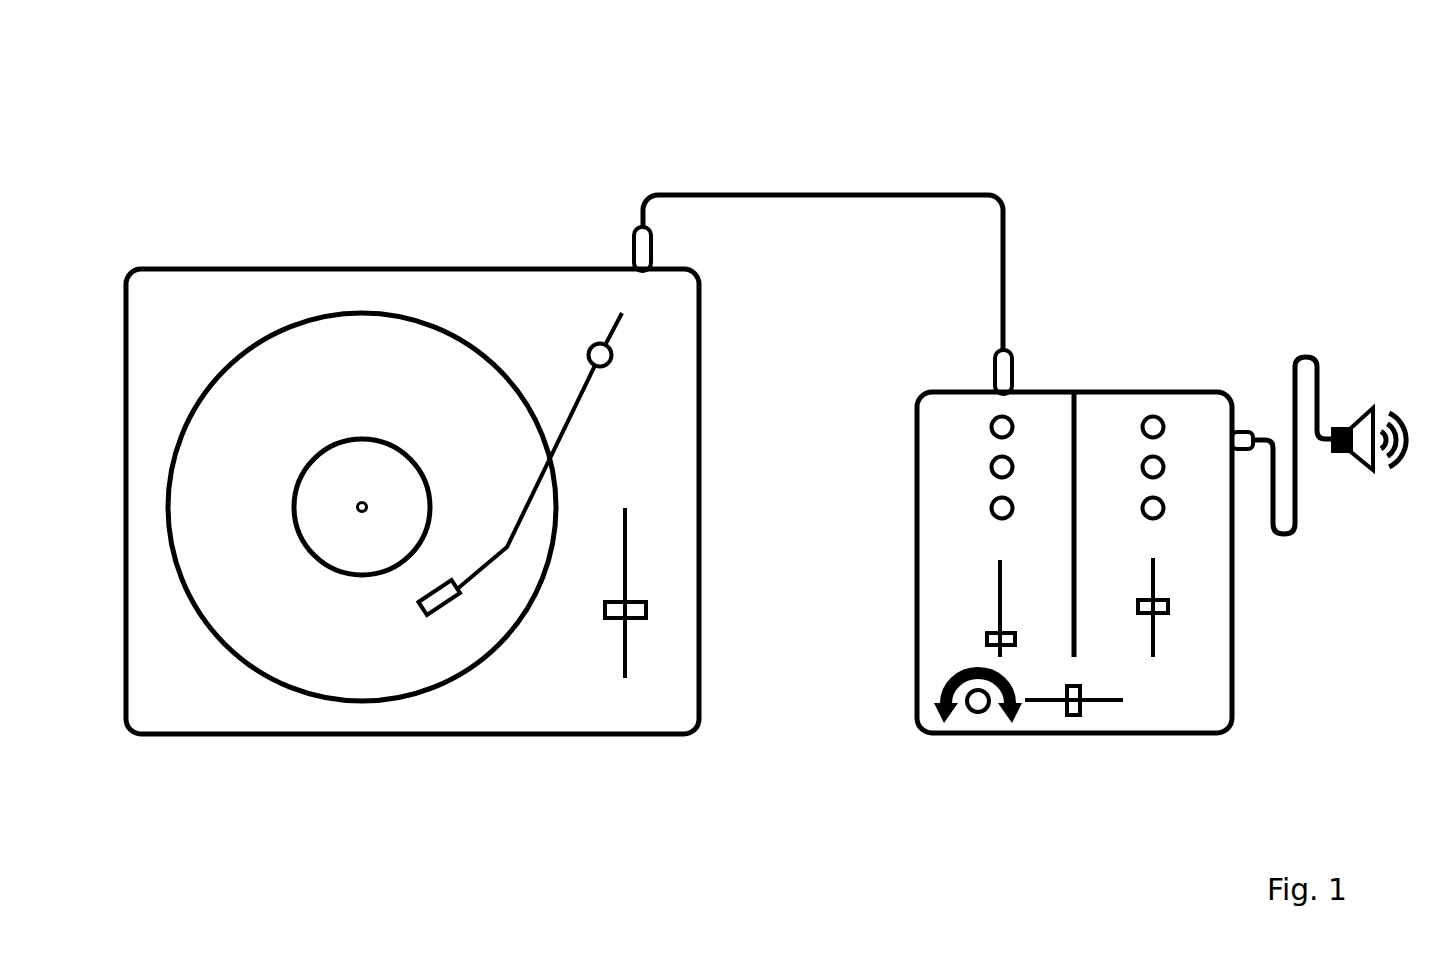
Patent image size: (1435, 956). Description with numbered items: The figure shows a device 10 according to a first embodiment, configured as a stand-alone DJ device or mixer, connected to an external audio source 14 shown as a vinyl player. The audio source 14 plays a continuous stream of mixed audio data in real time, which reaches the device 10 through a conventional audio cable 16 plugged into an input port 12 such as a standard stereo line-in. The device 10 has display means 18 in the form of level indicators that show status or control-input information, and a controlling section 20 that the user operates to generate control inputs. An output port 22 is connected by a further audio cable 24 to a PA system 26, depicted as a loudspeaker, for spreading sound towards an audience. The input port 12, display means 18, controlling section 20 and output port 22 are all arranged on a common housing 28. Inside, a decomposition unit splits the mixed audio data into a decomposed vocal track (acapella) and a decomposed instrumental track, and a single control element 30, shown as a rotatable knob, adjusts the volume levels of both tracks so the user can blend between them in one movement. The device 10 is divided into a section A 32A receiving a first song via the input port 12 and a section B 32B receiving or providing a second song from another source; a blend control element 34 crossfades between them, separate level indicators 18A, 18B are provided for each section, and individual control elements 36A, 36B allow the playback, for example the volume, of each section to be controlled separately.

The device 10 is at (1069, 553).
The input port 12 is at (1015, 378).
The audio source 14 is at (470, 297).
The audio cable 16 is at (792, 195).
The display means 18 is at (1115, 400).
The level indicator 18A is at (1012, 470).
The level indicator 18B is at (1164, 470).
The controlling section 20 is at (945, 648).
The output port 22 is at (1247, 444).
The audio cable 24 is at (1307, 350).
The PA system 26 is at (1363, 462).
The common housing 28 is at (917, 455).
The control element 30 is at (977, 703).
The section A 32A is at (1030, 469).
The section B 32B is at (1231, 603).
The blend control element 34 is at (1082, 712).
The individual control element 36A is at (1012, 637).
The individual control element 36B is at (1163, 603).